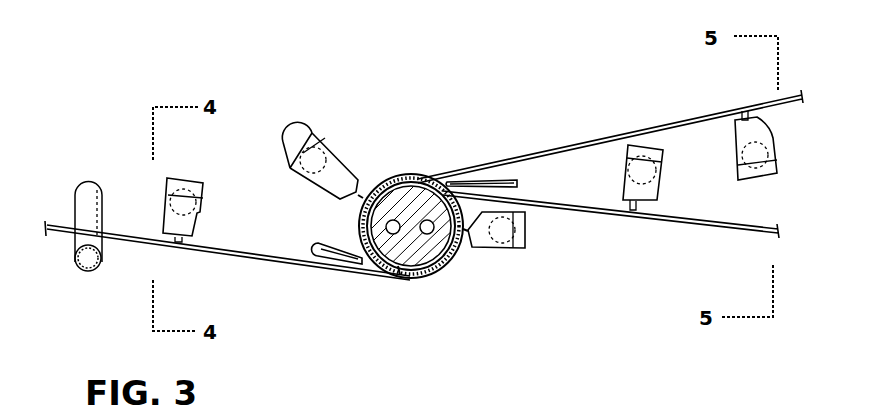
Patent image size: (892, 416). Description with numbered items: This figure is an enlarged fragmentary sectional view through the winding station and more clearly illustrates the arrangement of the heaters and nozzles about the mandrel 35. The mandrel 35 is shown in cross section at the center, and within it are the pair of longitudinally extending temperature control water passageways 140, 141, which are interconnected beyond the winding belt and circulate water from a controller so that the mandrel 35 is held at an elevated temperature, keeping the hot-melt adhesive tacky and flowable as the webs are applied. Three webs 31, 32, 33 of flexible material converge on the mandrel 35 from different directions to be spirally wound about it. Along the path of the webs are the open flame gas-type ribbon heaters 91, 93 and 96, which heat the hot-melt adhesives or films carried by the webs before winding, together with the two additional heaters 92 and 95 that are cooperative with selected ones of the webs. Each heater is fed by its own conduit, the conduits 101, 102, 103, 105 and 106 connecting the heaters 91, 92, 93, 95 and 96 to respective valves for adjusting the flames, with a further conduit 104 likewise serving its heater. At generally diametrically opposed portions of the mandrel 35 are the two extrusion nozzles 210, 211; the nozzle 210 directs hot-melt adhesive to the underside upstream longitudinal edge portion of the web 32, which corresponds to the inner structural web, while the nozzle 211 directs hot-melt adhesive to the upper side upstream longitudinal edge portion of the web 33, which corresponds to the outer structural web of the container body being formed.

The web 31 is at (703, 228).
The web 32 is at (565, 136).
The web 33 is at (68, 236).
The mandrel 35 is at (400, 276).
The heater 91 is at (668, 177).
The heater 92 is at (745, 145).
The heater 93 is at (203, 197).
The heater 95 is at (512, 245).
The heater 96 is at (305, 151).
The conduit 101 is at (665, 163).
The conduit 102 is at (745, 142).
The conduit 103 is at (175, 178).
The conduit 104 is at (88, 197).
The conduit 105 is at (526, 243).
The conduit 106 is at (292, 143).
The temperature control water passageway 140 is at (388, 184).
The temperature control water passageway 141 is at (426, 272).
The extrusion nozzle 210 is at (528, 172).
The extrusion nozzle 211 is at (334, 258).